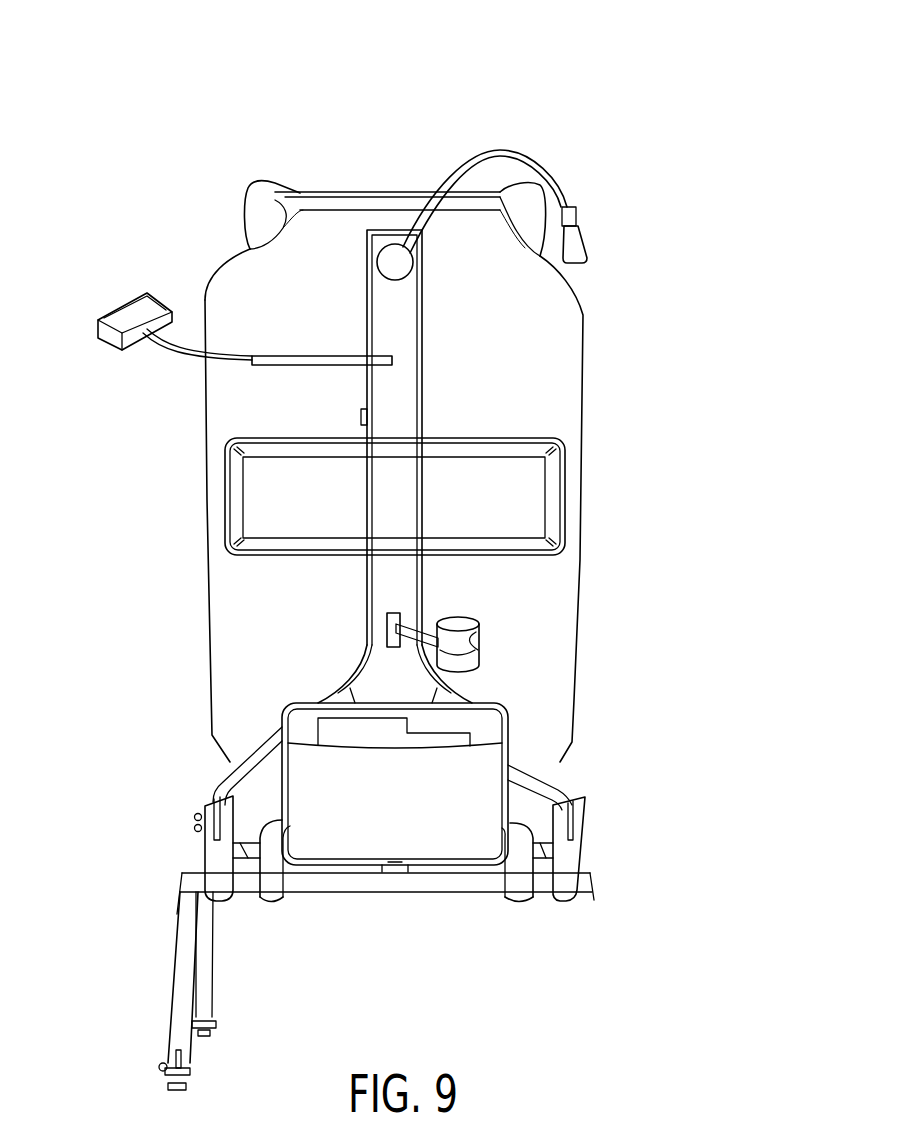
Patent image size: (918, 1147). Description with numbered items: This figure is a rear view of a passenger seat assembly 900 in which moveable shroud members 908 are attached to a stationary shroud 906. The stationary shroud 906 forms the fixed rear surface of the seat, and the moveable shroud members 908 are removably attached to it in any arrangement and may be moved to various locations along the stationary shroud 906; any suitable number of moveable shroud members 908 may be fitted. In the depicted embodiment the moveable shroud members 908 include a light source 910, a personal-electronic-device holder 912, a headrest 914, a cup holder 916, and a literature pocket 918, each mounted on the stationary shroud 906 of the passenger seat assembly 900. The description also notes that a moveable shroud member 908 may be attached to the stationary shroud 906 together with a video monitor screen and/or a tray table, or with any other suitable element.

The passenger seat assembly 900 is at (674, 92).
The stationary shroud 906 is at (385, 318).
The moveable shroud members 908 is at (415, 366).
The light source 910 is at (389, 253).
The personal-electronic-device holder 912 is at (112, 333).
The headrest 914 is at (237, 507).
The cup holder 916 is at (392, 632).
The literature pocket 918 is at (305, 795).